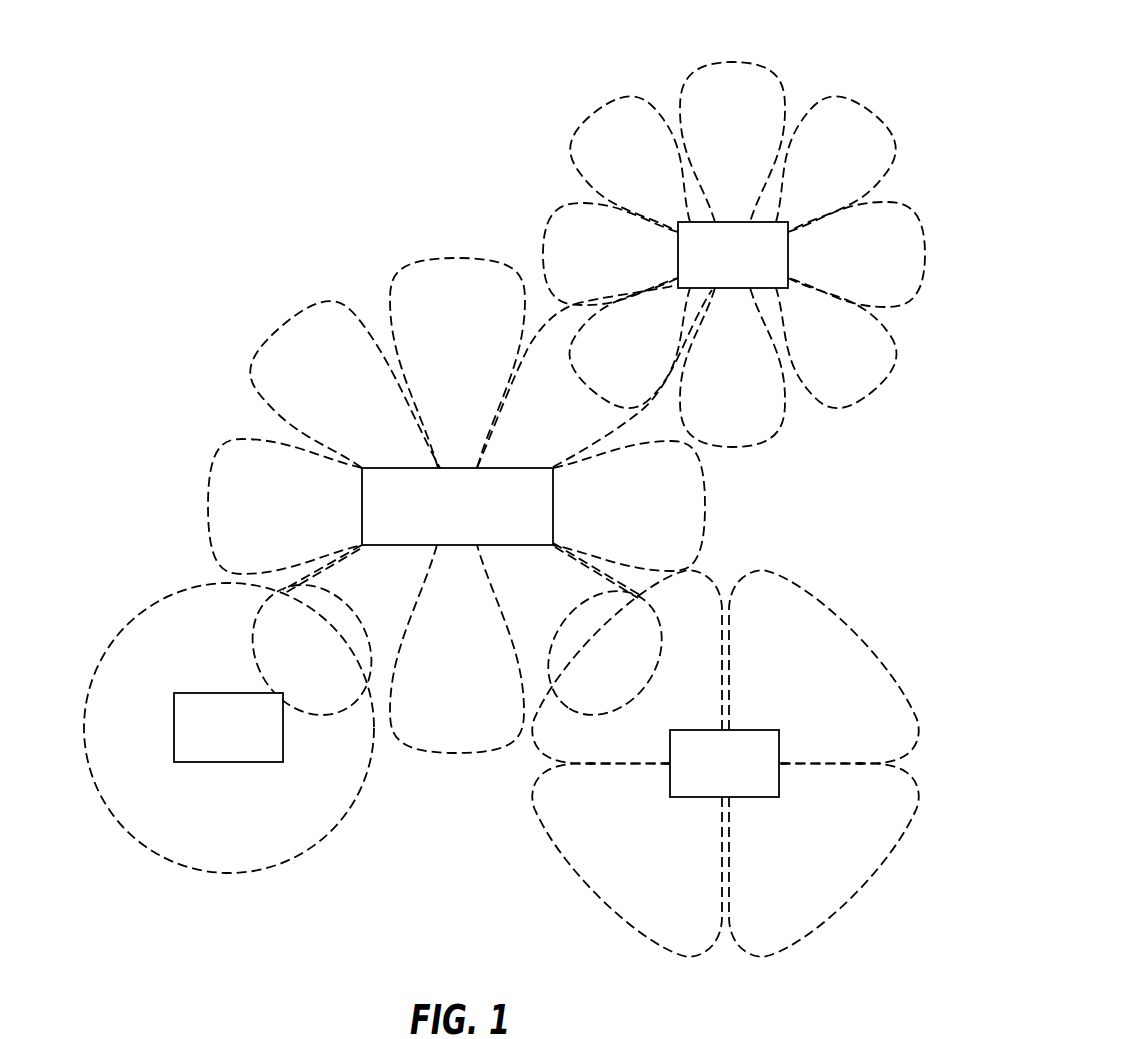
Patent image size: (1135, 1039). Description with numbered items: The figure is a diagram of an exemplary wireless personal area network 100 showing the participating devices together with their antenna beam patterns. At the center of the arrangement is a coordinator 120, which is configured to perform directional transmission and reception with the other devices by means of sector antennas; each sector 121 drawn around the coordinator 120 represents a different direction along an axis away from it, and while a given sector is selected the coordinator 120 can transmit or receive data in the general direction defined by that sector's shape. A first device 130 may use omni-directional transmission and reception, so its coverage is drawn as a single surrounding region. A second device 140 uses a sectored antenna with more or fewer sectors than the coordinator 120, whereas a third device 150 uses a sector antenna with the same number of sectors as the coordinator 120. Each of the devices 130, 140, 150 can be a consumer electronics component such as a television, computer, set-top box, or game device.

The network 100 is at (147, 134).
The coordinator 120 is at (553, 508).
The sector 121 is at (413, 260).
The first device (DEV 1) 130 is at (207, 693).
The second device (DEV 2) 140 is at (754, 730).
The third device (DEV 3) 150 is at (678, 258).